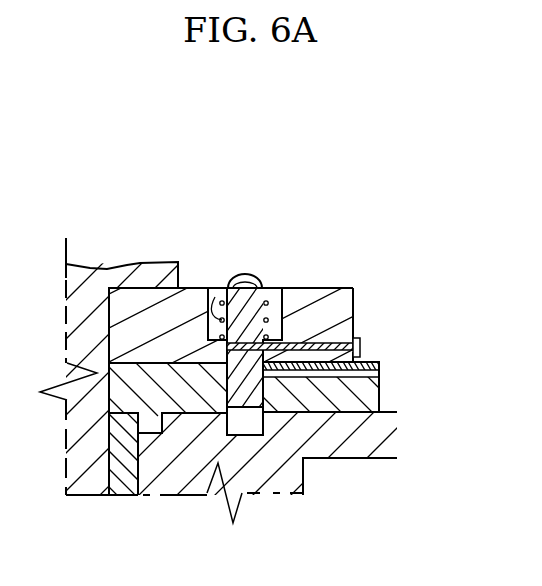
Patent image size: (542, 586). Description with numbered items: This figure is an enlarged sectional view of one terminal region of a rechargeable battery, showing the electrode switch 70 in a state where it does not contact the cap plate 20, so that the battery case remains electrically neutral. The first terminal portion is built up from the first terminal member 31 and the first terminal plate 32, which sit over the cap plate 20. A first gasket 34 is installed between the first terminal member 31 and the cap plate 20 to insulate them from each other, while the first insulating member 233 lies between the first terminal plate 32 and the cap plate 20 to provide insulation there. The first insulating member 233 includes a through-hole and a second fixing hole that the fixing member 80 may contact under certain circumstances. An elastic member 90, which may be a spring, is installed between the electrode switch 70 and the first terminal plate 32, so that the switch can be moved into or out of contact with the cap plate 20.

The cap plate 20 is at (184, 480).
The first terminal member 31 is at (135, 273).
The first terminal plate 32 is at (317, 296).
The first gasket 34 is at (122, 483).
The electrode switch 70 is at (245, 283).
The fixing member 80 is at (360, 347).
The elastic member 90 is at (216, 296).
The first insulating member 233 is at (363, 394).